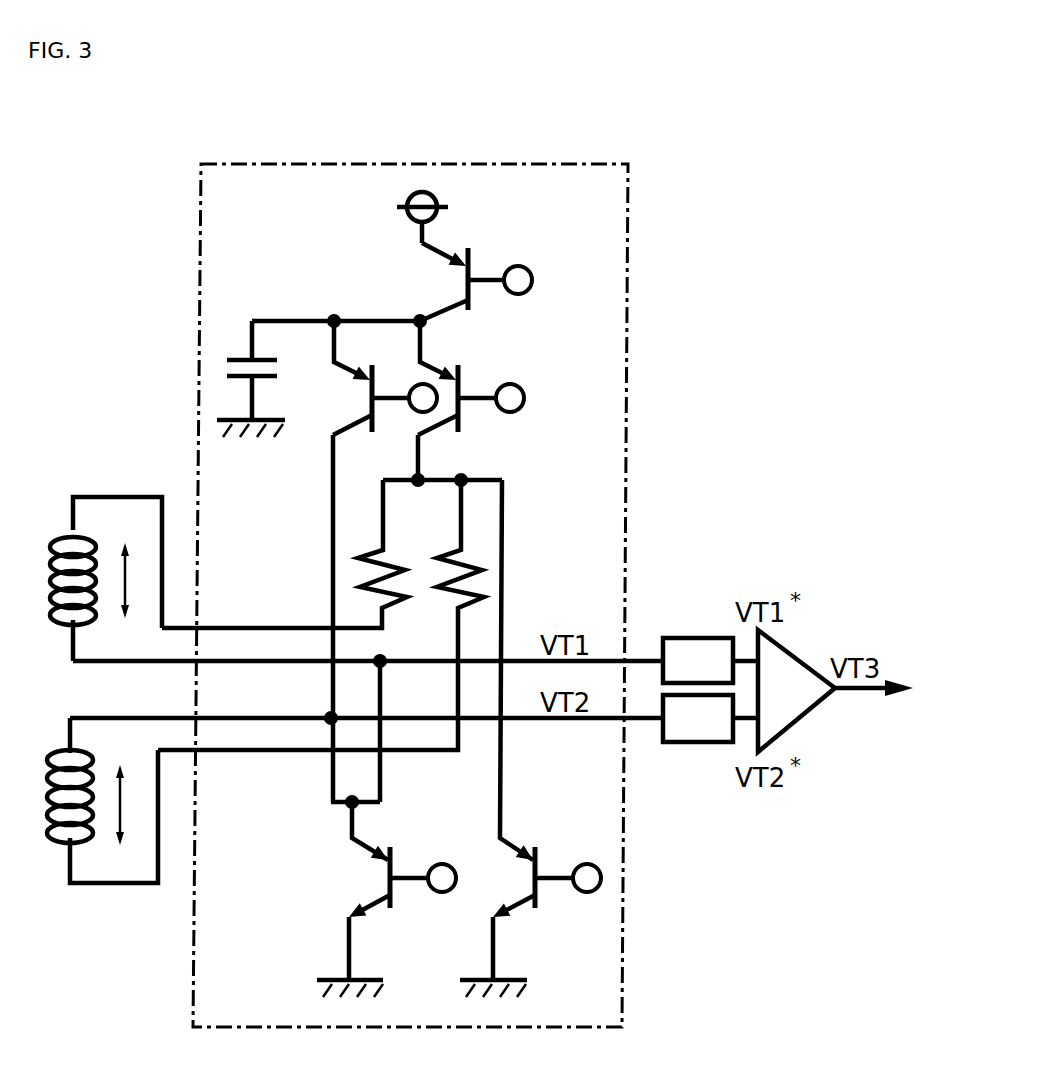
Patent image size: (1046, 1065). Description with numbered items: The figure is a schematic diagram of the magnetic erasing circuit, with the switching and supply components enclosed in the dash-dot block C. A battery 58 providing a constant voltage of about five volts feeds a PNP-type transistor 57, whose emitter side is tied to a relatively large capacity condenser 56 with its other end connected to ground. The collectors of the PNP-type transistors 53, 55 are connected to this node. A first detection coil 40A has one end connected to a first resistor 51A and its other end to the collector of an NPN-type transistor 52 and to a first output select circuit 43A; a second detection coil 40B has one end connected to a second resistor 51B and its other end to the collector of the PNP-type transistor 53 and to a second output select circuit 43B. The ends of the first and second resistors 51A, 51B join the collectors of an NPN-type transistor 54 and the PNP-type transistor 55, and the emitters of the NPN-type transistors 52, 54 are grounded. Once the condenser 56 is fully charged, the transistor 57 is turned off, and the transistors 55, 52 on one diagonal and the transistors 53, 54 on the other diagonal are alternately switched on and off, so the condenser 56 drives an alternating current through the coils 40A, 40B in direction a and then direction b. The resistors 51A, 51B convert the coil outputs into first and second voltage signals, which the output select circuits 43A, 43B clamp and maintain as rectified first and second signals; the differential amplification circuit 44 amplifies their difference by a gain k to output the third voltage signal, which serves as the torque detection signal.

The detection circuit unit C is at (630, 248).
The battery 58 is at (422, 192).
The PNP-type transistor 57 is at (470, 252).
The condenser 56 is at (236, 356).
The PNP-type transistor 53 is at (373, 368).
The PNP-type transistor 55 is at (462, 372).
The first resistor 51A is at (388, 556).
The second resistor 51B is at (445, 572).
The first detection coil 40A is at (55, 535).
The second detection coil 40B is at (52, 842).
The NPN-type transistor 52 is at (392, 857).
The NPN-type transistor 54 is at (538, 857).
The first output select circuit 43A is at (697, 653).
The second output select circuit 43B is at (690, 732).
The differential amplification circuit 44 is at (808, 718).